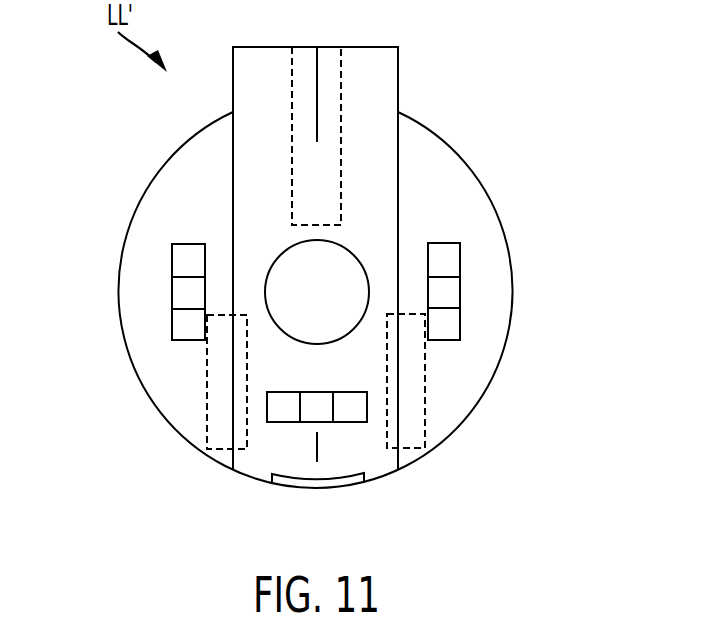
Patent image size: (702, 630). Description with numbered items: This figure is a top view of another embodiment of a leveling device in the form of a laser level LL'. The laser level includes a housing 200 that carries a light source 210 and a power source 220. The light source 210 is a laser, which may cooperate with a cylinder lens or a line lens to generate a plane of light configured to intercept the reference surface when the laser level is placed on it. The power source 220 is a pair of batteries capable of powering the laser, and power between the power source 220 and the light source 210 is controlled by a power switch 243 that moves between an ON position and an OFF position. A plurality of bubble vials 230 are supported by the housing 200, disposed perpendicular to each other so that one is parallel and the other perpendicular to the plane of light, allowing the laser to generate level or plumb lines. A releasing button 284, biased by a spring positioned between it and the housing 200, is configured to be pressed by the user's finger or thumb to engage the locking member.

The housing 200 is at (140, 337).
The light source 210 is at (341, 90).
The power source 220 is at (203, 418).
The bubble vials 230 is at (172, 262).
The power switch 243 is at (315, 490).
The releasing button 284 is at (326, 275).